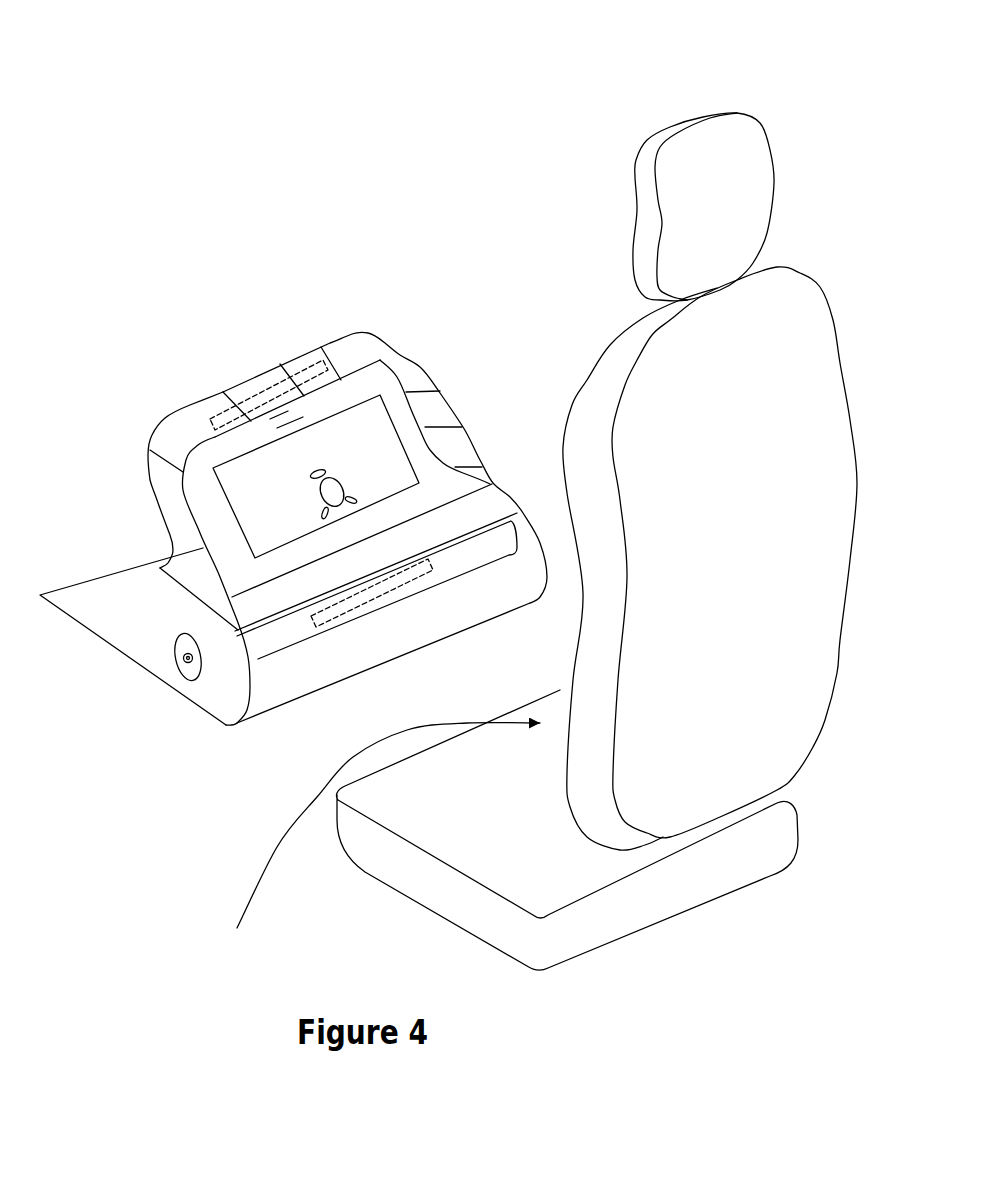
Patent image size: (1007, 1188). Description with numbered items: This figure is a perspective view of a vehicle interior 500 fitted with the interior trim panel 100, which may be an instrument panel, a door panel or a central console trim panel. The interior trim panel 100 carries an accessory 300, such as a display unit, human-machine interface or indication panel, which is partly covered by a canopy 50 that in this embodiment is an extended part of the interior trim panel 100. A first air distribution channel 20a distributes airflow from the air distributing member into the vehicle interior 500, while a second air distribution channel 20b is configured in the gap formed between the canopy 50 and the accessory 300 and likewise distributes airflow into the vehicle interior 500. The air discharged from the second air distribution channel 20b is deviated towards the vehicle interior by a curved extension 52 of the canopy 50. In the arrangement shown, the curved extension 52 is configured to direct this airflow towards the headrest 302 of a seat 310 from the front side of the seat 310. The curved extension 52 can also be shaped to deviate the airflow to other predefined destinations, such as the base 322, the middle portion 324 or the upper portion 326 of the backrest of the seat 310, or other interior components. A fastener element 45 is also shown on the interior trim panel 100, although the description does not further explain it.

The interior trim panel 100 is at (253, 320).
The vehicle interior 500 is at (474, 209).
The accessory 300 is at (175, 434).
The canopy 50 is at (148, 442).
The curved extension 52 is at (382, 359).
The second air distribution channel 20b is at (314, 360).
The first air distribution channel 20a is at (409, 589).
The fastener knob 45 is at (186, 659).
The headrest 302 is at (769, 152).
The middle portion 324 is at (710, 577).
The upper portion 326 is at (662, 320).
The base 322 is at (663, 770).
The seat 310 is at (374, 840).